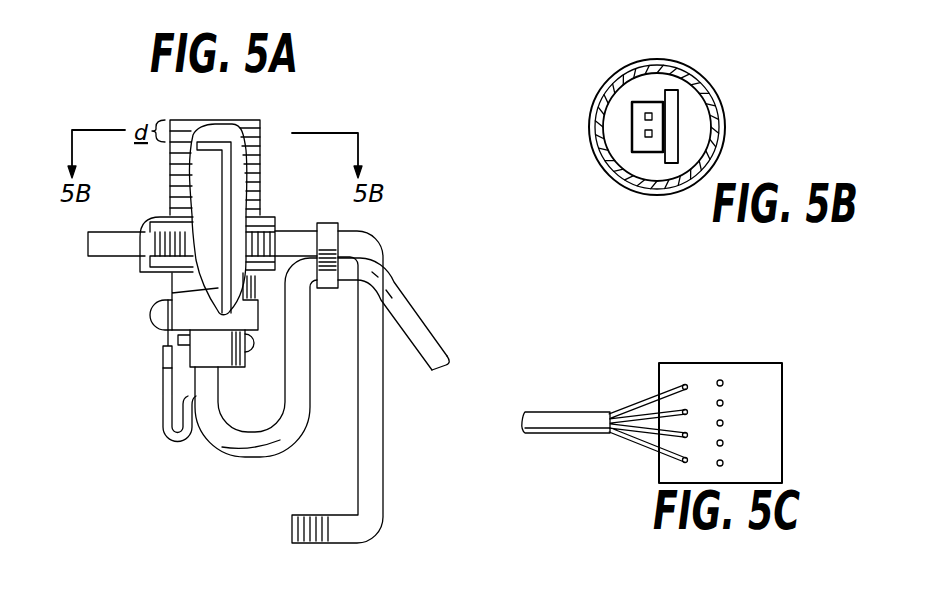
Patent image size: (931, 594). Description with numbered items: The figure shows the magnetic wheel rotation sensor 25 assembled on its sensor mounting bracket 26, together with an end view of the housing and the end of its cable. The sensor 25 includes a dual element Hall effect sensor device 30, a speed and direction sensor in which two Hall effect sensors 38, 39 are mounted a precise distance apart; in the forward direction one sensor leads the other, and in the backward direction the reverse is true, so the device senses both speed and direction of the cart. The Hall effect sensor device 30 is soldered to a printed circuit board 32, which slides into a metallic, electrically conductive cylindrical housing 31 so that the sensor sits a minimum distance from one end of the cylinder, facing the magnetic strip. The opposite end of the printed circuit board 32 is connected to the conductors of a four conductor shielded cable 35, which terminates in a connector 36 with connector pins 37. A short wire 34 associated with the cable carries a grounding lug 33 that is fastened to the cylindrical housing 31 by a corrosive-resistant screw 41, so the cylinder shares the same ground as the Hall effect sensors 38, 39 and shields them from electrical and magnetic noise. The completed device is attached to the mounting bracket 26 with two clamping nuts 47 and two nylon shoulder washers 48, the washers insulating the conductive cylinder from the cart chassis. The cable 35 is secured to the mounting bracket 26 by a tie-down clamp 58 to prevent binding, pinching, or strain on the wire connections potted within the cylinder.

In FIG. 5A, the sensor 25 is at (304, 118).
In FIG. 5B, the sensor 25 is at (731, 118).
In FIG. 5A, the sensor mounting bracket 26 is at (376, 483).
In FIG. 5A, the Hall effect sensor device 30 is at (213, 145).
In FIG. 5B, the Hall effect sensor device 30 is at (632, 123).
In FIG. 5A, the cylindrical housing 31 is at (256, 332).
In FIG. 5A, the printed circuit board 32 is at (231, 168).
In FIG. 5B, the printed circuit board 32 is at (675, 107).
In FIG. 5A, the grounding lug 33 is at (162, 355).
In FIG. 5A, the short wire 34 is at (162, 418).
In FIG. 5A, the four conductor shielded cable 35 is at (266, 440).
In FIG. 5C, the four conductor shielded cable 35 is at (568, 425).
In FIG. 5C, the connector 36 is at (675, 367).
In FIG. 5C, the connector pins 37 is at (720, 380).
In FIG. 5B, the Hall effect sensor 38 is at (648, 113).
In FIG. 5B, the Hall effect sensor 39 is at (648, 137).
In FIG. 5A, the corrosive-resistant screw 41 is at (150, 315).
In FIG. 5A, the clamping nut 47 is at (160, 268).
In FIG. 5A, the nylon shoulder washer 48 is at (292, 232).
In FIG. 5A, the tie-down clamp 58 is at (334, 233).